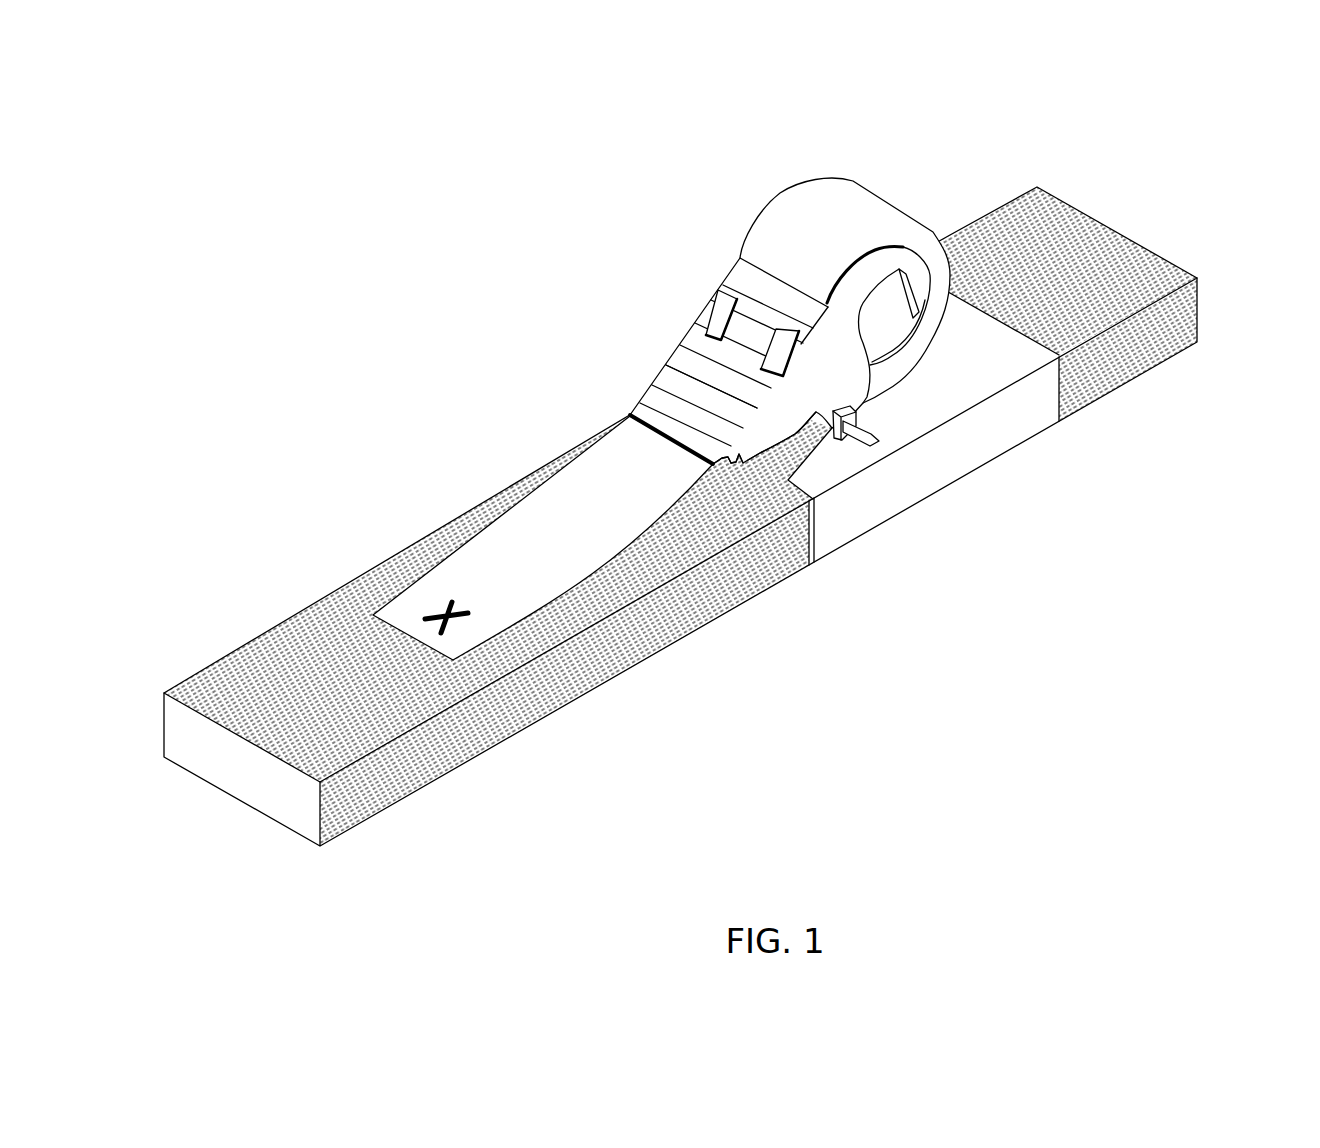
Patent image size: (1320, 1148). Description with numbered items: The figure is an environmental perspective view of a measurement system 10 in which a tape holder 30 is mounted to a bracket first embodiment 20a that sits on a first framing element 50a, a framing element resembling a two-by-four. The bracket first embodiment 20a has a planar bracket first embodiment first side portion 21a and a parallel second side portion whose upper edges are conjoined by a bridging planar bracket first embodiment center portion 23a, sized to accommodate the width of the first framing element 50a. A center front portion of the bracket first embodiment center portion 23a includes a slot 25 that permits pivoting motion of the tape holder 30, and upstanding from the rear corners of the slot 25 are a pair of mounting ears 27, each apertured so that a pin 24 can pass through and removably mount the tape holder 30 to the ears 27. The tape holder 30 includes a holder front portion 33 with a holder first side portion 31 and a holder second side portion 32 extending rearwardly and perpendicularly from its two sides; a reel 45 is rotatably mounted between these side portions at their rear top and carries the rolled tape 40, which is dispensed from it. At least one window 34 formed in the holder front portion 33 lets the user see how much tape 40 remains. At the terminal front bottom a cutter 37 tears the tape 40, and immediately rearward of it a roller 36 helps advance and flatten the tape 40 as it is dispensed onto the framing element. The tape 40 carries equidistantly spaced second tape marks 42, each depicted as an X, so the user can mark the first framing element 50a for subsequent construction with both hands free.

The measurement system 10 is at (1025, 470).
The bracket first embodiment 20a is at (525, 465).
The bracket first embodiment first side portion 21a is at (850, 503).
The bracket first embodiment center portion 23a is at (939, 405).
The first framing element 50a is at (1130, 338).
The tape 40 is at (436, 586).
The second tape marks 42 is at (436, 614).
The tape holder 30 is at (712, 217).
The holder first side portion 31 is at (900, 260).
The reel 45 is at (868, 318).
The holder second side portion 32 is at (742, 258).
The holder front portion 33 is at (688, 355).
The window 34 is at (710, 317).
The roller 36 is at (737, 467).
The cutter 37 is at (708, 466).
The slot 25 is at (787, 441).
The mounting ears 27 is at (847, 436).
The pin 24 is at (875, 442).